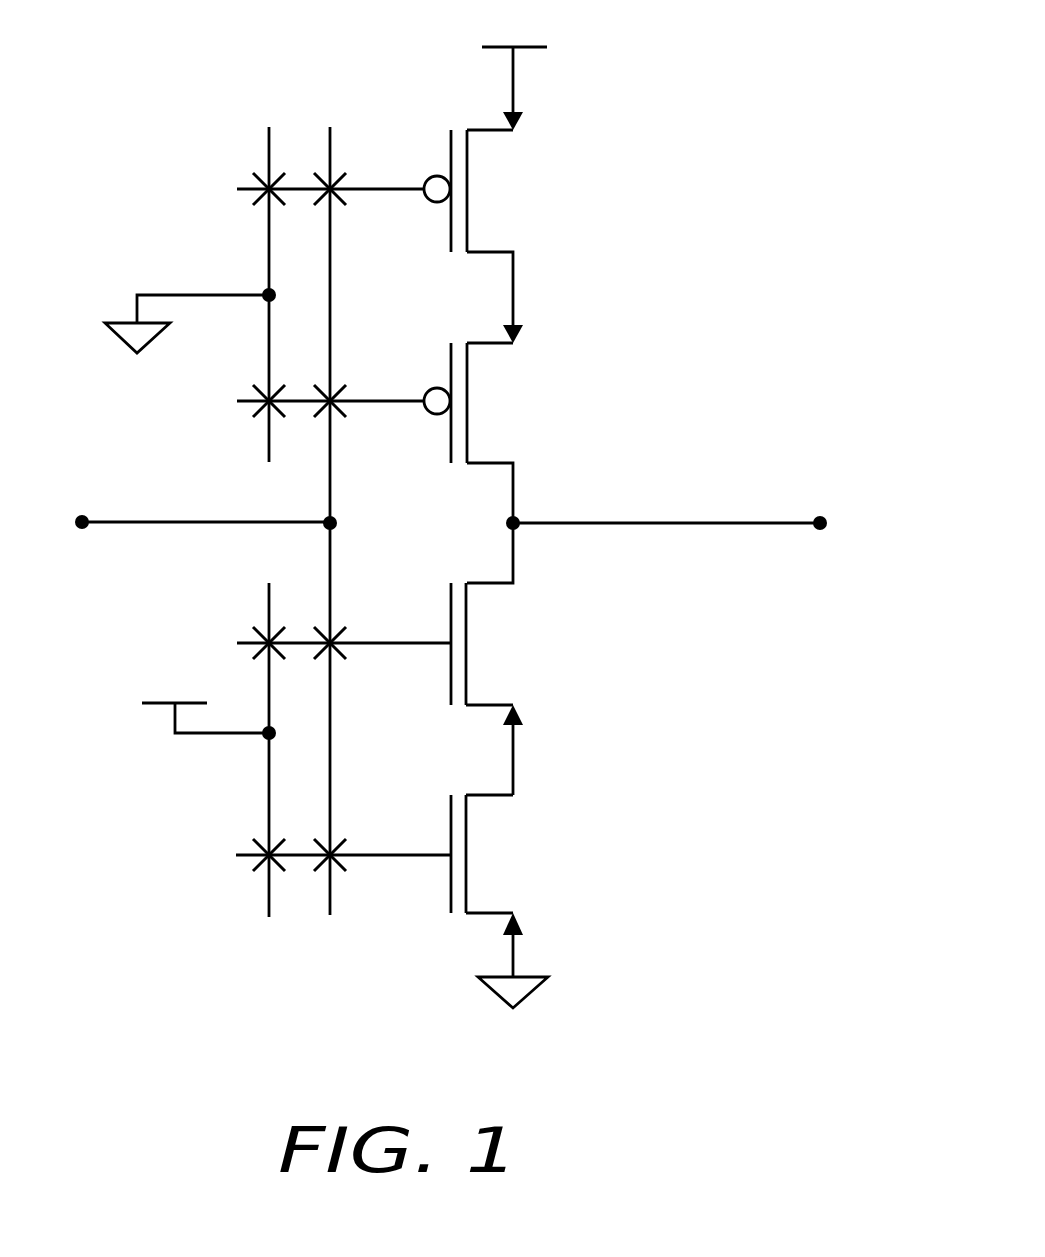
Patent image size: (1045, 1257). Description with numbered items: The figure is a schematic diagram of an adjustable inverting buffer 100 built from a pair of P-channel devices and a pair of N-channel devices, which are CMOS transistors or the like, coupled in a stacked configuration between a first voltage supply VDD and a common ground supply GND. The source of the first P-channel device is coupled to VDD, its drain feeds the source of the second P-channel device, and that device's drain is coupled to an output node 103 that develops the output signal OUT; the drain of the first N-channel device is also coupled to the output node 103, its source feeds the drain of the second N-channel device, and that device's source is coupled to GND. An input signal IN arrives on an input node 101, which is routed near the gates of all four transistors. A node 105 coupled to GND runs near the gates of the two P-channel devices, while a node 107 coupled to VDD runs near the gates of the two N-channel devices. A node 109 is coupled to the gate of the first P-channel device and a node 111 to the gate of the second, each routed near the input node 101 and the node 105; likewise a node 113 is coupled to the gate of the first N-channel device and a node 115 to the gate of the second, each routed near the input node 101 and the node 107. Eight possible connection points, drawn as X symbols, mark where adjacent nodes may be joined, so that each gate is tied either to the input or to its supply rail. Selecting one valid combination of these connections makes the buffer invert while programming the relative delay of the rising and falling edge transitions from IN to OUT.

The adjustable inverting buffer 100 is at (776, 122).
The input node 101 is at (170, 522).
The output node 103 is at (633, 523).
The node coupled to GND 105 is at (269, 265).
The node coupled to VDD 107 is at (269, 757).
The P1 gate node 109 is at (405, 189).
The P2 gate node 111 is at (375, 401).
The N1 gate node 113 is at (418, 643).
The N2 gate node 115 is at (387, 855).